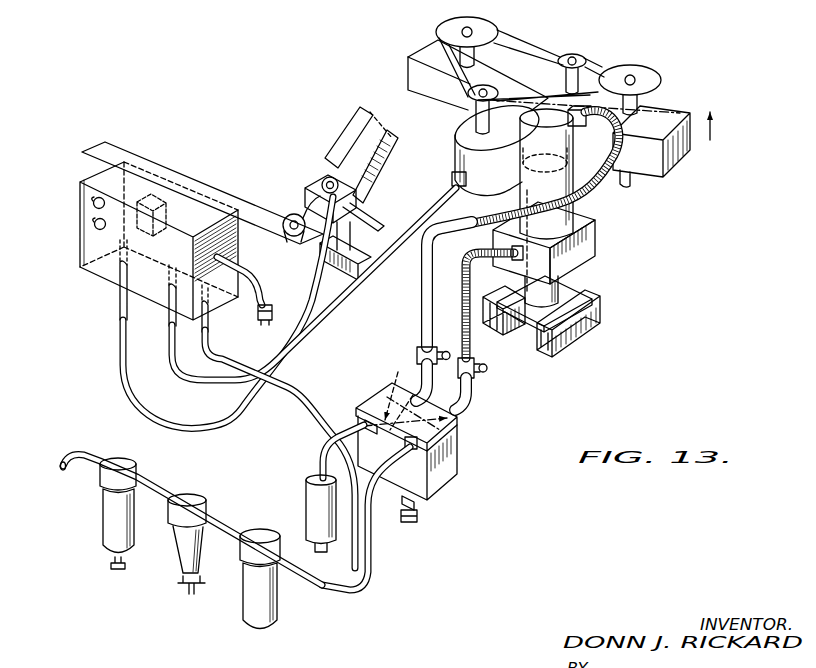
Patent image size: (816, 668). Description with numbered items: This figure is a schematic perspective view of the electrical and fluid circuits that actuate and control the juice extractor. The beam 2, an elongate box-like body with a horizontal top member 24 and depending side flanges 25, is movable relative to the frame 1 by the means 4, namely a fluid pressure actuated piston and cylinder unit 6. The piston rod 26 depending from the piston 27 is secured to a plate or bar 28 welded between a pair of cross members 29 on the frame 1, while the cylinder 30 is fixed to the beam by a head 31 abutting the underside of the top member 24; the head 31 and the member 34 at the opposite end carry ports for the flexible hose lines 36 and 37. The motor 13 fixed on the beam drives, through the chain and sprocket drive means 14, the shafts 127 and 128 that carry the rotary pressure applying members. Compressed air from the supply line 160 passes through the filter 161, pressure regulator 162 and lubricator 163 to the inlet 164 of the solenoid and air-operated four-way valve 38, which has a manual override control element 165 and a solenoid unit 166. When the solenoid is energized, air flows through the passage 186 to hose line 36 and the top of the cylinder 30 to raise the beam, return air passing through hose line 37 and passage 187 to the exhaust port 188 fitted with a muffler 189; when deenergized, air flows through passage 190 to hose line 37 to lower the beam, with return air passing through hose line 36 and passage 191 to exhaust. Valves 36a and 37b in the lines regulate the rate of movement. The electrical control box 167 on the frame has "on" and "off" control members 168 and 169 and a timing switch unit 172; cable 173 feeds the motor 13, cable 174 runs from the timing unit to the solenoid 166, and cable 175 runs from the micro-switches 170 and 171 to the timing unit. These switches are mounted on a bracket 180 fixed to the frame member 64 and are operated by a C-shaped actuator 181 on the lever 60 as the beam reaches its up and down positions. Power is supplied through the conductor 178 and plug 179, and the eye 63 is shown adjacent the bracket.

The frame assembly 1 is at (563, 313).
The beam assembly 2 is at (679, 161).
The means for effecting movement of the beam 4 is at (574, 243).
The piston and cylinder unit 6 is at (579, 195).
The motor 13 is at (453, 163).
The chain and sprocket drive means 14 is at (466, 99).
The top member 24 is at (425, 50).
The side flanges 25 is at (412, 77).
The piston rod 26 is at (559, 277).
The piston 27 is at (537, 160).
The plate or bar 28 is at (533, 313).
The cross members 29 is at (495, 298).
The cylinder 30 is at (574, 212).
The head 31 is at (597, 115).
The member 34 is at (593, 242).
The hose line 36 is at (421, 297).
The valve 36a is at (416, 342).
The hose line 37 is at (461, 263).
The valve 37b is at (482, 378).
The four-way valve 38 is at (421, 451).
The lever 60 is at (388, 129).
The eye 63 is at (299, 217).
The frame member 64 is at (247, 188).
The shaft 127 is at (637, 76).
The shaft 128 is at (470, 30).
The compressed air supply line 160 is at (153, 488).
The filter 161 is at (106, 522).
The pressure regulator 162 is at (182, 582).
The lubricator 163 is at (240, 646).
The inlet 164 is at (422, 446).
The manual override control element 165 is at (419, 519).
The solenoid unit 166 is at (416, 503).
The electrical control box 167 is at (145, 228).
The "on" control member 168 is at (80, 192).
The "off" control member 169 is at (94, 223).
The switch 170 is at (357, 205).
The switch 171 is at (327, 178).
The timing switch unit 172 is at (157, 197).
The cable 173 is at (320, 331).
The cable 174 is at (299, 393).
The cable 175 is at (138, 390).
The conductor 178 is at (251, 271).
The plug 179 is at (256, 311).
The bracket 180 is at (355, 247).
The C-shaped actuator 181 is at (368, 223).
The passage 186 is at (440, 383).
The passage 187 is at (392, 447).
The exhaust port 188 is at (366, 424).
The muffler 189 is at (320, 473).
The passage 190 is at (463, 423).
The passage 191 is at (395, 396).